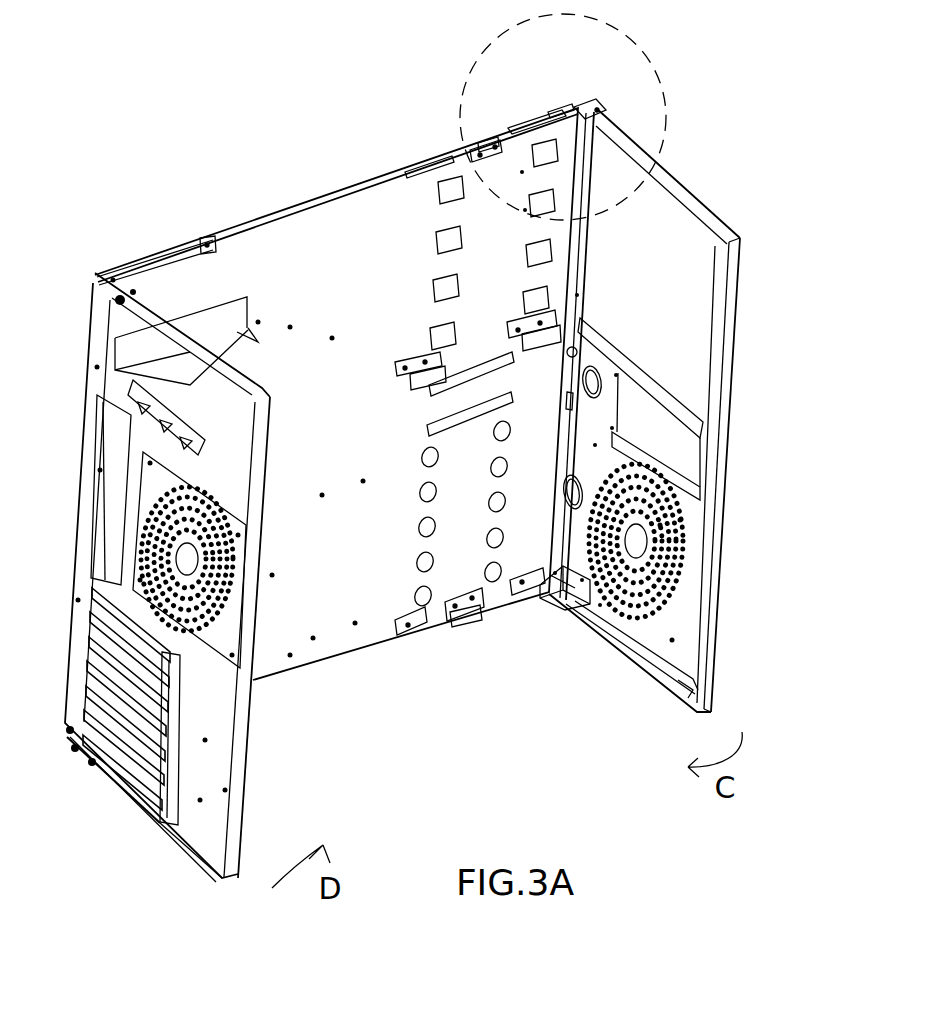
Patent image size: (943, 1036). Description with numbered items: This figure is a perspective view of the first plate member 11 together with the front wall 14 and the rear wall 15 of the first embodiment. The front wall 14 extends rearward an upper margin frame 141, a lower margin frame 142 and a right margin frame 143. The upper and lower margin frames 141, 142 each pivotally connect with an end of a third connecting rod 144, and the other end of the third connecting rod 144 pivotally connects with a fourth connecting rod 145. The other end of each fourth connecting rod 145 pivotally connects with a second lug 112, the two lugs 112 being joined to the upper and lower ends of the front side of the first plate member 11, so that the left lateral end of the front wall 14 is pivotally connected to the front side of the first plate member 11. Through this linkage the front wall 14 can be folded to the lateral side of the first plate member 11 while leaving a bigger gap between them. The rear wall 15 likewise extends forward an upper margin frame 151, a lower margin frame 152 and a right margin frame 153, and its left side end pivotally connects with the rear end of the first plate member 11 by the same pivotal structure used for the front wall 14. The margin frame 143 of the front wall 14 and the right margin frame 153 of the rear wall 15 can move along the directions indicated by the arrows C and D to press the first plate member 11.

The first plate member 11 is at (310, 232).
The second lug 112 is at (486, 141).
The fourth connecting rod 145 is at (525, 117).
The third connecting rod 144 is at (594, 110).
The front wall 14 is at (678, 653).
The upper margin frame 141 is at (678, 183).
The lower margin frame 142 is at (632, 653).
The right margin frame 143 is at (725, 398).
The rear wall 15 is at (198, 828).
The upper margin frame 151 is at (157, 307).
The lower margin frame 152 is at (203, 865).
The right margin frame 153 is at (250, 760).